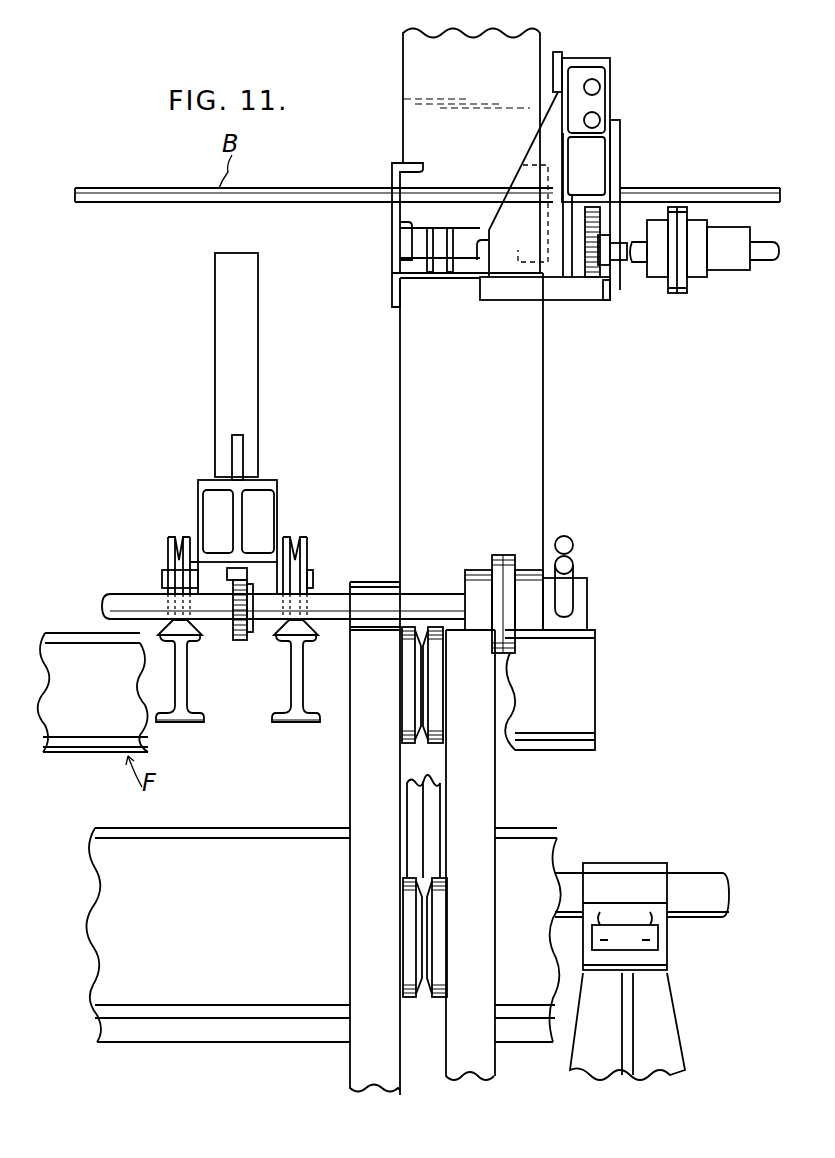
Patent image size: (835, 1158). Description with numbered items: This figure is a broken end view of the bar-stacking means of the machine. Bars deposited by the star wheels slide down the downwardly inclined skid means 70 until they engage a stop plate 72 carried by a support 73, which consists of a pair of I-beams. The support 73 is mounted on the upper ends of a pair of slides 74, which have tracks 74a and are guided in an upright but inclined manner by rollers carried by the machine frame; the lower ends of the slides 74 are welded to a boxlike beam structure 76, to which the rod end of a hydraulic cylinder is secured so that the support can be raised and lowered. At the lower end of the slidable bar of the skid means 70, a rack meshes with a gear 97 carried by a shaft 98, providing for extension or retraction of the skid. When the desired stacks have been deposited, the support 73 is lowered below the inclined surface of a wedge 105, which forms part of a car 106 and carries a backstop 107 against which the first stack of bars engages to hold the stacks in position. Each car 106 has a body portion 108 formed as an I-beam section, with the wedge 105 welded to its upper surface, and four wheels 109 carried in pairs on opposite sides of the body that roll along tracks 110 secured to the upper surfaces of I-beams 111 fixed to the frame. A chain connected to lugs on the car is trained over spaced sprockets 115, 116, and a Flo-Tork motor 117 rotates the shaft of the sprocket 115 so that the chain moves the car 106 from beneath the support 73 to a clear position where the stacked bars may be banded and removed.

The skid means 70 is at (604, 56).
The stop plate 72 is at (408, 70).
The support 73 is at (520, 163).
The slides 74 is at (528, 438).
The tracks 74a is at (433, 808).
The boxlike beam structure 76 is at (412, 688).
The gear 97 is at (594, 280).
The shaft 98 is at (770, 260).
The wedge 105 is at (240, 453).
The car 106 is at (282, 499).
The backstop 107 is at (226, 362).
The body portion 108 is at (210, 502).
The wheels 109 is at (166, 545).
The tracks 110 is at (192, 626).
The I-beams 111 is at (293, 719).
The sprocket 115 is at (238, 633).
The sprocket 116 is at (228, 571).
The Flo-Tork motor 117 is at (572, 546).